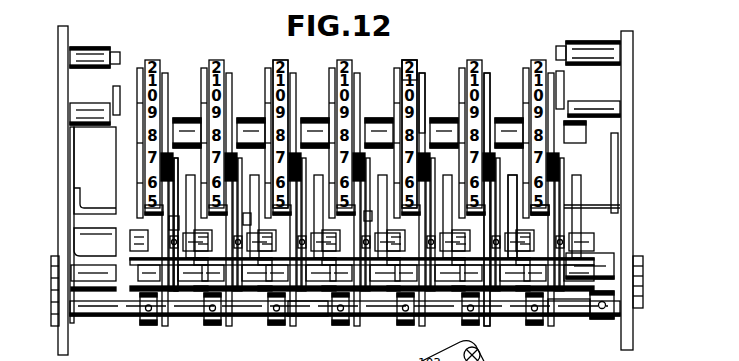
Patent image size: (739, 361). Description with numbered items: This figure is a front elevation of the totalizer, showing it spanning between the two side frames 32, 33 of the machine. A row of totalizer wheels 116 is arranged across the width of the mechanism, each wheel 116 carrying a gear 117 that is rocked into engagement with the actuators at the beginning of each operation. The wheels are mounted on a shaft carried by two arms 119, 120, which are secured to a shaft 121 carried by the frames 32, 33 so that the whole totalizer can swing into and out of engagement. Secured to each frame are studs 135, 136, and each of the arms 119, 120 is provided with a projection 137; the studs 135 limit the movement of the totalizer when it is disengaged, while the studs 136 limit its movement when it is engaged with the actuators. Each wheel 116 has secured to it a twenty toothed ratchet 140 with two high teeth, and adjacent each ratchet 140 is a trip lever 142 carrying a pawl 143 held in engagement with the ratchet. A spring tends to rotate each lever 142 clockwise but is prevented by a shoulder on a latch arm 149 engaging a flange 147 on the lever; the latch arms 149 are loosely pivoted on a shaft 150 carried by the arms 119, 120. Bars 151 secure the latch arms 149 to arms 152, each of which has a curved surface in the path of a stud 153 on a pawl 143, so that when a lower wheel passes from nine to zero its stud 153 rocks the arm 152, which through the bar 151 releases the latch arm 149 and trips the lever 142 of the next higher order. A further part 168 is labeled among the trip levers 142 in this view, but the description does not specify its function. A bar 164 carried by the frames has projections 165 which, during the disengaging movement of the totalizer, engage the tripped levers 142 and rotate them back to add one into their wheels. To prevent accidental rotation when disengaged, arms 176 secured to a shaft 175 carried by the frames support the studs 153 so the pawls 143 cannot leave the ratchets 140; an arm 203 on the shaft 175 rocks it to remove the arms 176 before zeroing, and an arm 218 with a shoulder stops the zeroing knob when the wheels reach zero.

The side frame 32 is at (56, 144).
The side frame 33 is at (617, 116).
The totalizer wheel 116 is at (409, 56).
The gear 117 is at (265, 61).
The arm 119 is at (110, 156).
The arm 120 is at (554, 151).
The shaft 121 is at (596, 252).
The stud 135 is at (90, 118).
The stud 136 is at (73, 38).
The projection 137 is at (105, 81).
The twenty toothed ratchet 140 is at (417, 70).
The lever 142 is at (164, 110).
The pawl 143 is at (362, 206).
The flange 147 is at (231, 110).
The latch arm 149 is at (240, 209).
The shaft 150 is at (108, 232).
The bar 151 is at (171, 280).
The arm 152 is at (475, 212).
The stud 153 is at (532, 215).
The bar 164 is at (562, 202).
The projection 165 is at (490, 149).
The lever 168 is at (163, 215).
The shaft 175 is at (319, 308).
The arm 176 is at (150, 318).
The arm 203 is at (578, 312).
The arm 218 is at (607, 312).